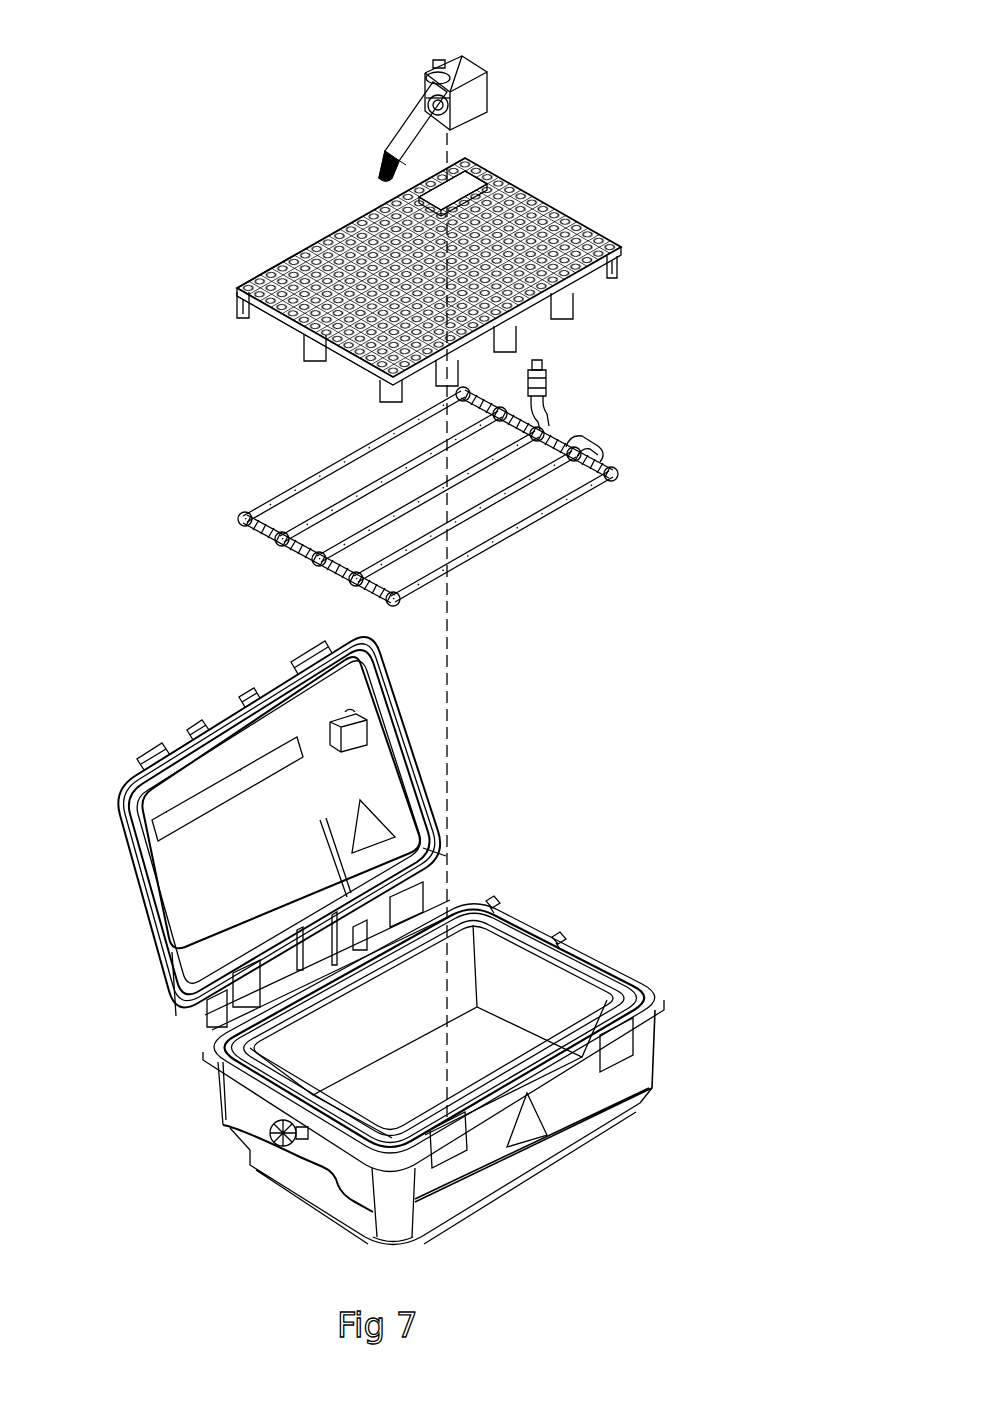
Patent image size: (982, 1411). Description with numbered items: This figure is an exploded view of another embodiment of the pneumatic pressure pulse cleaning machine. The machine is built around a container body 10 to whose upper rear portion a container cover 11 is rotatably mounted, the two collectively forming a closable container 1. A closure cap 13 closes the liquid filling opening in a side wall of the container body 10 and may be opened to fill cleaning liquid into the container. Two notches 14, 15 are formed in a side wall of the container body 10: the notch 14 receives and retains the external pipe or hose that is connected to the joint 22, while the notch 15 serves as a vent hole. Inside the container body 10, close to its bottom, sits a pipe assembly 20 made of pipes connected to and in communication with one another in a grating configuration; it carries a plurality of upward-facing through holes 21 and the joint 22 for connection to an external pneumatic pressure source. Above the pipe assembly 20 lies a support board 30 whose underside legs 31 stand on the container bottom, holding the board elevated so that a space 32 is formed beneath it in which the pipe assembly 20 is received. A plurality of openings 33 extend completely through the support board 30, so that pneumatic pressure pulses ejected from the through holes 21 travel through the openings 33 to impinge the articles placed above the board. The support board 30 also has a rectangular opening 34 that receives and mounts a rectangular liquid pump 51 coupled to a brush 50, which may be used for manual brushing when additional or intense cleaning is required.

The closable container 1 is at (563, 832).
The container body 10 is at (553, 1160).
The container cover 11 is at (178, 860).
The closure cap 13 is at (270, 1138).
The notch 14 is at (493, 905).
The notch 15 is at (560, 940).
The pipe assembly 20 is at (580, 445).
The through holes 21 is at (307, 478).
The joint 22 is at (553, 375).
The support board 30 is at (597, 235).
The legs 31 is at (620, 265).
The space 32 is at (263, 318).
The openings 33 is at (267, 268).
The rectangular opening 34 is at (480, 163).
The brush 50 is at (387, 160).
The rectangular liquid pump 51 is at (478, 103).